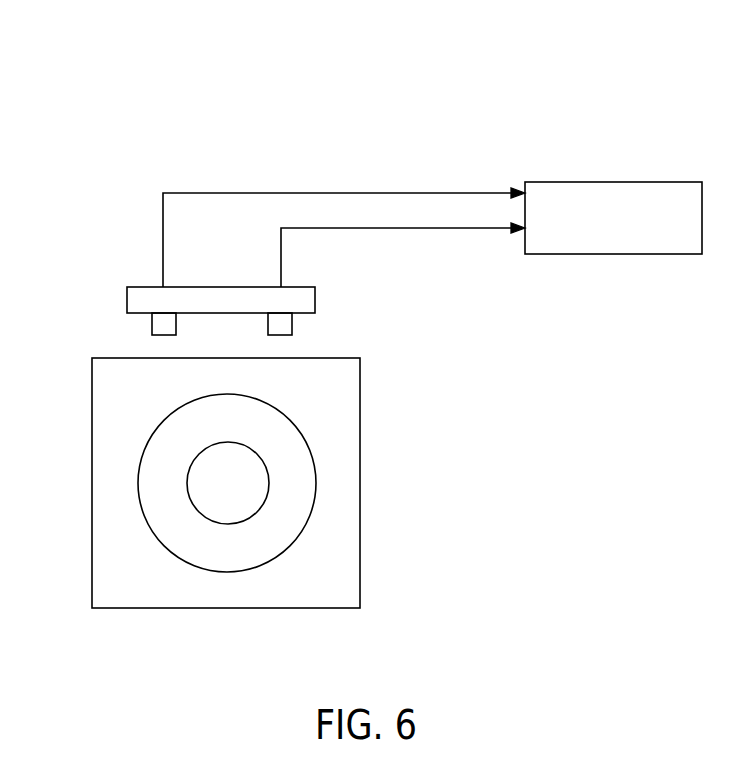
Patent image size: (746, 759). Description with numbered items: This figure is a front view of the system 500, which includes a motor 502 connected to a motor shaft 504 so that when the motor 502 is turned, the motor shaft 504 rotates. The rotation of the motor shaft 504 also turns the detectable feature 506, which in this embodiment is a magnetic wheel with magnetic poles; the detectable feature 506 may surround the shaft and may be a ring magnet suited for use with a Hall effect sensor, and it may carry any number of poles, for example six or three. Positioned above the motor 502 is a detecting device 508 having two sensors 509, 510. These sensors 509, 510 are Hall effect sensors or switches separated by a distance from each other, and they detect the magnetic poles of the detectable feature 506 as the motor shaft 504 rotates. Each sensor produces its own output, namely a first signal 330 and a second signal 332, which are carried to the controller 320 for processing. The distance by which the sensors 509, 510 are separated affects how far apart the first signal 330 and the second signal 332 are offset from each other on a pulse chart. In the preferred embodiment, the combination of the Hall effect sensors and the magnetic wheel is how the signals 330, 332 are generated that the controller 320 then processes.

The system 500 is at (120, 63).
The controller 320 is at (613, 182).
The first signal 330 is at (398, 192).
The second signal 332 is at (398, 229).
The motor 502 is at (92, 563).
The motor shaft 504 is at (187, 483).
The detectable feature 506 is at (170, 413).
The detecting device 508 is at (142, 287).
The sensor 509 is at (152, 325).
The sensor 510 is at (292, 325).